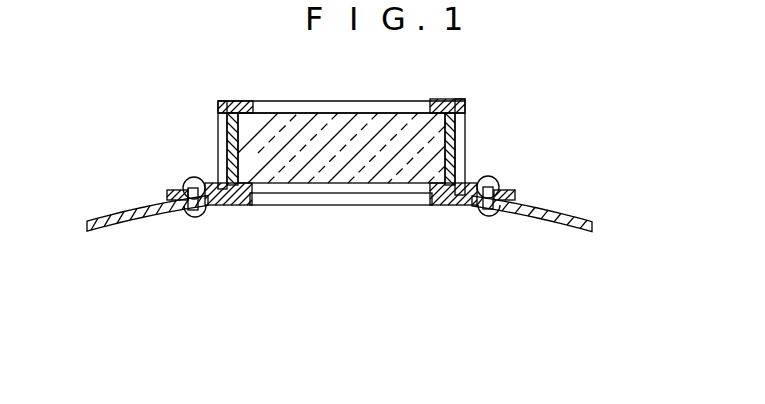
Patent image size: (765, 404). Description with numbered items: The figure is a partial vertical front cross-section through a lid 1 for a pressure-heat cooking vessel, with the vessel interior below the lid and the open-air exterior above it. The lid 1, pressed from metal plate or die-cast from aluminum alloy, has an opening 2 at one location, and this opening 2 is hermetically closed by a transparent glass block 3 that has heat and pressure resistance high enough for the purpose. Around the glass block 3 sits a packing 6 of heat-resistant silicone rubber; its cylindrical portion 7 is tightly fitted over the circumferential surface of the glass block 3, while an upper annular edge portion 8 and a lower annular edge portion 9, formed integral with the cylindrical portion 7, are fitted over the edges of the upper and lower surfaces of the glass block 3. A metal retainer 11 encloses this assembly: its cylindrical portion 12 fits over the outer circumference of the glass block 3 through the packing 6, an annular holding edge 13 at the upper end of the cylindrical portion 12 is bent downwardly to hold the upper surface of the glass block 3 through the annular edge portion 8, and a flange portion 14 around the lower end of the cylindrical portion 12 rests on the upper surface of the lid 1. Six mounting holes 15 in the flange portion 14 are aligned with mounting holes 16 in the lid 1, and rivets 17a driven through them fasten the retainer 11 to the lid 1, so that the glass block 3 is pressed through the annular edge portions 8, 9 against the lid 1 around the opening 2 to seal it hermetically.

The lid 1 is at (592, 222).
The opening 2 is at (345, 205).
The transparent glass block 3 is at (298, 172).
The packing 6 is at (462, 133).
The cylindrical portion 7 is at (455, 160).
The annular edge portion 8 is at (458, 101).
The annular edge portion 9 is at (436, 196).
The retainer 11 is at (225, 131).
The cylindrical portion 12 is at (226, 158).
The annular holding edge 13 is at (228, 117).
The flange portion 14 is at (172, 191).
The mounting holes 15 is at (175, 212).
The mounting holes 16 is at (216, 204).
The rivets 17a is at (195, 208).